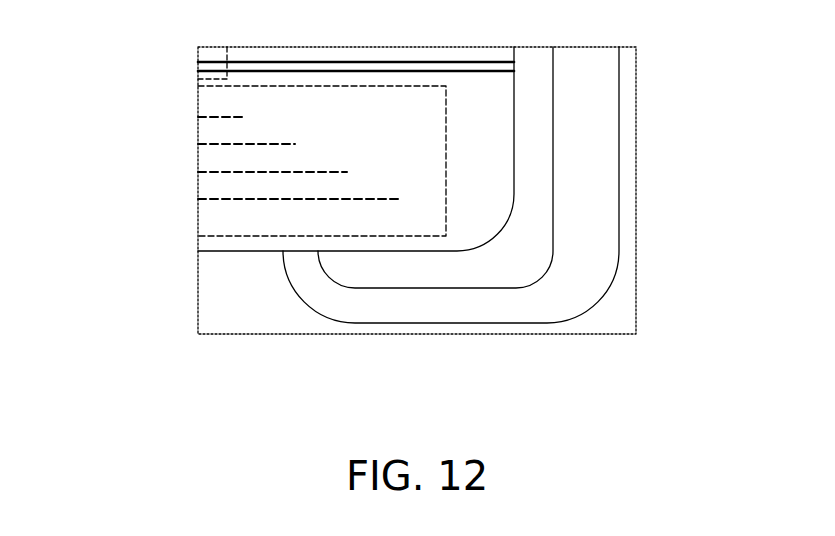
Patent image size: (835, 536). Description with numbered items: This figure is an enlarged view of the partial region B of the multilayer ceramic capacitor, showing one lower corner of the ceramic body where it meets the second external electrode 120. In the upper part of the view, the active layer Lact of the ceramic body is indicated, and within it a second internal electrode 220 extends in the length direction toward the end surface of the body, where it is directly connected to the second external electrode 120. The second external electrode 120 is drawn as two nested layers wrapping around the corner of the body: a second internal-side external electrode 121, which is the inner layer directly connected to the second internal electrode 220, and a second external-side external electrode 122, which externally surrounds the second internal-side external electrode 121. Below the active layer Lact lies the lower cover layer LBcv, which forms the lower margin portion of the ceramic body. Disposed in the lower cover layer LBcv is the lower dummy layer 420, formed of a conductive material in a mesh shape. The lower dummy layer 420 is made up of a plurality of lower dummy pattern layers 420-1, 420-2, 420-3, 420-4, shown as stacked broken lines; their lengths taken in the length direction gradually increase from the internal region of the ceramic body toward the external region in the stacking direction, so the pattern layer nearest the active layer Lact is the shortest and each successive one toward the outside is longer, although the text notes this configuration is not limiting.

The second internal electrode 220 is at (455, 62).
The active layer Lact is at (227, 68).
The lower dummy layer 420 is at (211, 170).
The lower dummy pattern layer 420-1 is at (205, 117).
The lower dummy pattern layer 420-2 is at (205, 144).
The lower dummy pattern layer 420-3 is at (205, 172).
The lower dummy pattern layer 420-4 is at (205, 199).
The lower cover layer LBcv is at (247, 236).
The second external electrode 120 is at (523, 185).
The second internal-side external electrode 121 is at (540, 167).
The second external-side external electrode 122 is at (590, 207).
The partial region B is at (430, 422).